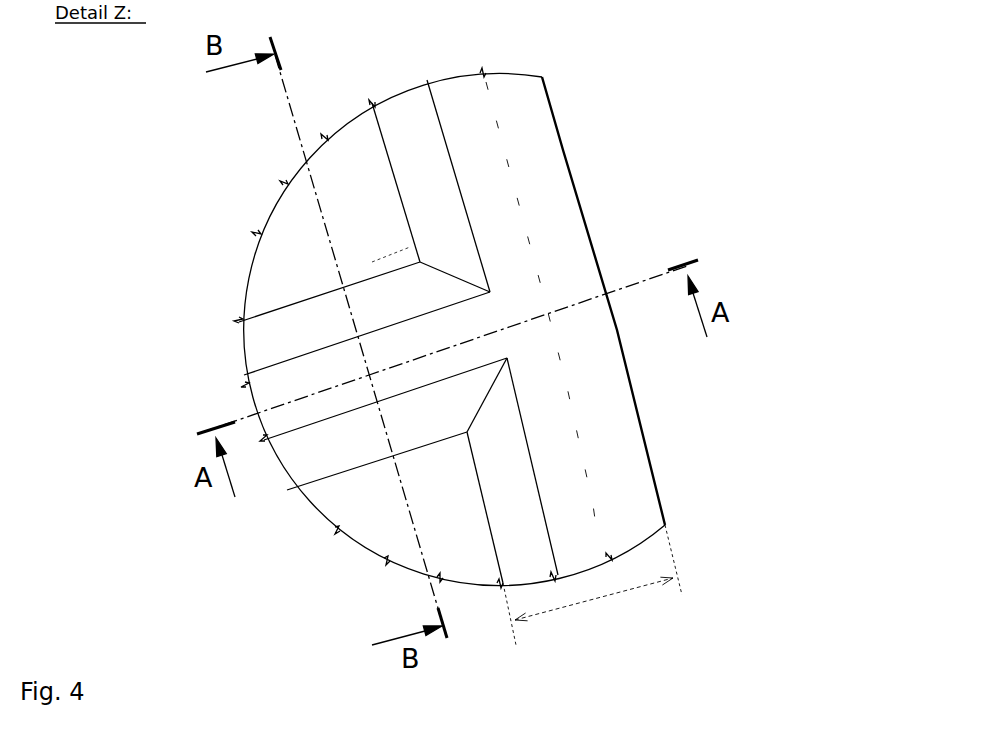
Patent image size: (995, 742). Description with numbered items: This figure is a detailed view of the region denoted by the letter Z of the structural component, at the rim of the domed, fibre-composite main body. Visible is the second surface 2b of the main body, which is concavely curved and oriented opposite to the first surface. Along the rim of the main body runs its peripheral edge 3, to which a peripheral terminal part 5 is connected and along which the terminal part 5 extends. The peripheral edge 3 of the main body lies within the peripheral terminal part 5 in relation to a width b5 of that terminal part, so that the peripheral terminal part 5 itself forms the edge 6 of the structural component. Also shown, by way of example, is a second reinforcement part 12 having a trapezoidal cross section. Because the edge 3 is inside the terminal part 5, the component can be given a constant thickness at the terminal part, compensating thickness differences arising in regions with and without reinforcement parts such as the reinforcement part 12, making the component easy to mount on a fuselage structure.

The peripheral edge 3 is at (497, 133).
The edge 6 is at (626, 370).
The peripheral terminal part 5 is at (625, 447).
The second surface 2b is at (285, 254).
The second reinforcement part 12 is at (309, 418).
The width b5 is at (567, 606).